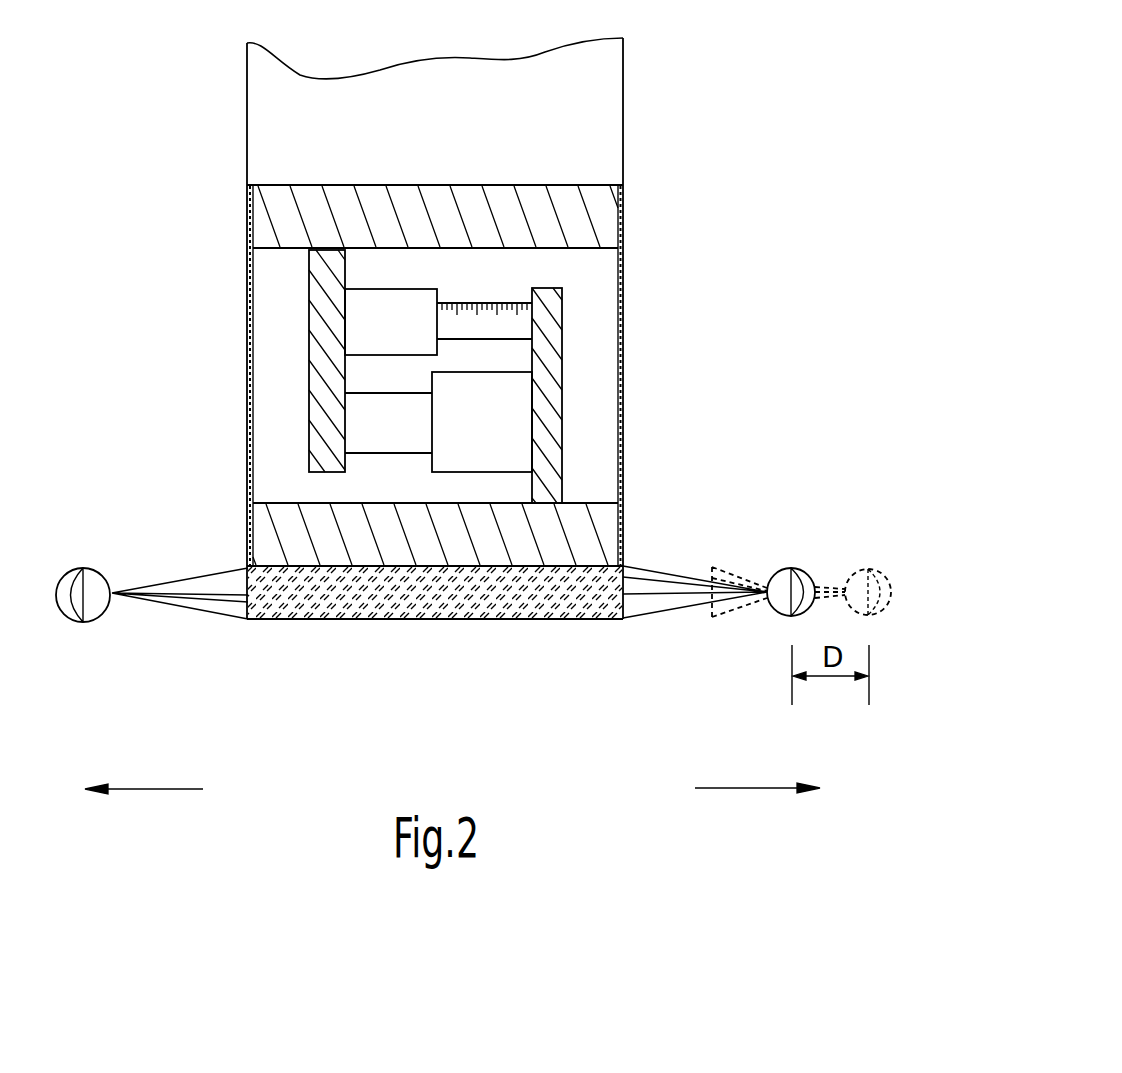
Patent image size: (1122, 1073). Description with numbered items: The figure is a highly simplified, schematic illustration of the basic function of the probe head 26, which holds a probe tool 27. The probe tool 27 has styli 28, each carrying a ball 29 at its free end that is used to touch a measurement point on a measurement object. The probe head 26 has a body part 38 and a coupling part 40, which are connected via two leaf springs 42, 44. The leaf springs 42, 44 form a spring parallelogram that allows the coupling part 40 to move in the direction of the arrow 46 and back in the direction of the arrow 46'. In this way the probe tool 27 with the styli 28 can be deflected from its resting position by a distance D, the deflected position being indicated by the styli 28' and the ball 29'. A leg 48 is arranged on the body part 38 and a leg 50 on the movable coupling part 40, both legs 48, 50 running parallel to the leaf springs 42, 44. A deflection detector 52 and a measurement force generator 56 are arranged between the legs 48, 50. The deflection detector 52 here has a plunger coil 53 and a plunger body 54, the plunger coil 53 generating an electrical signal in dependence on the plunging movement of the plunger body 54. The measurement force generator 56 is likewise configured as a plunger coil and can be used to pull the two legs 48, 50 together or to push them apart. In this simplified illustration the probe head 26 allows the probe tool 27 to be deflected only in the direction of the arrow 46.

The probe head 26 is at (671, 268).
The probe tool 27 is at (407, 620).
The styli 28 is at (439, 639).
The deflected styli 28' is at (778, 637).
The ball 29 is at (434, 583).
The deflected ball 29' is at (878, 561).
The body part 38 is at (382, 218).
The coupling part 40 is at (290, 530).
The leaf spring 42 is at (247, 387).
The leaf spring 44 is at (627, 407).
The arrow 46 is at (144, 864).
The arrow 46' is at (757, 862).
The leg 48 is at (320, 430).
The leg 50 is at (550, 380).
The deflection detector 52 is at (468, 280).
The plunger coil 53 is at (382, 317).
The plunger body 54 is at (492, 303).
The measurement force generator 56 is at (490, 423).